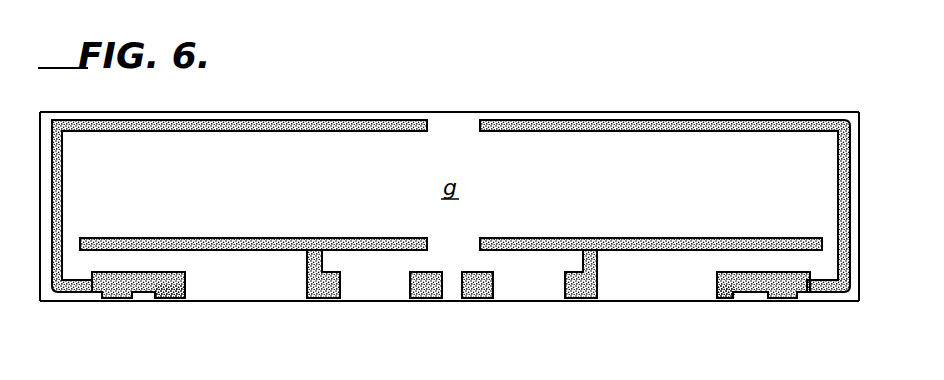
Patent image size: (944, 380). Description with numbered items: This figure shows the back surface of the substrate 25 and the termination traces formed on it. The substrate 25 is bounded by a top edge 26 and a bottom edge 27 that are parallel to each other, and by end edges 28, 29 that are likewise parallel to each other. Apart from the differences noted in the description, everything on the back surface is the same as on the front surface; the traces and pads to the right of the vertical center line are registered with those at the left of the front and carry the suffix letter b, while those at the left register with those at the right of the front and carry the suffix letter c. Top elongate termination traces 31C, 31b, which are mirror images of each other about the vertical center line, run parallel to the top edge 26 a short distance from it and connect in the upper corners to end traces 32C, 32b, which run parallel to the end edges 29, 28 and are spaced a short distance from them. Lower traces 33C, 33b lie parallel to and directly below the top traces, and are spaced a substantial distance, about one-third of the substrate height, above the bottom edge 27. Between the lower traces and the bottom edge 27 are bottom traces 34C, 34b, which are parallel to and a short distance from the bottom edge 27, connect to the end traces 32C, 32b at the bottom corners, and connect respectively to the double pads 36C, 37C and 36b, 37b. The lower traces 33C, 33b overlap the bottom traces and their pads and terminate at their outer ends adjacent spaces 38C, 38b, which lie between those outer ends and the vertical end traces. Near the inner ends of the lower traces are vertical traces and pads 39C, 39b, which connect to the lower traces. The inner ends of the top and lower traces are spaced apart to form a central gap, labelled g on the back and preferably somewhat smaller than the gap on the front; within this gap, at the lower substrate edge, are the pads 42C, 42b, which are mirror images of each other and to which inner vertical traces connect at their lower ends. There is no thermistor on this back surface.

The substrate 25 is at (228, 288).
The top edge 26 is at (497, 116).
The bottom edge 27 is at (655, 302).
The end edge 28 is at (862, 114).
The end edge 29 is at (41, 120).
The top elongate termination trace 31C is at (243, 118).
The top elongate termination trace 31b is at (620, 118).
The end trace 32C is at (63, 178).
The end trace 32b is at (838, 160).
The lower trace 33C is at (190, 238).
The lower trace 33b is at (632, 238).
The bottom trace 34C is at (82, 292).
The bottom trace 34b is at (830, 292).
The pad 36C is at (108, 298).
The pad 36b is at (796, 298).
The pad 37C is at (168, 298).
The pad 37b is at (733, 298).
The space 38C is at (80, 240).
The space 38b is at (826, 243).
The vertical trace and pad 39C is at (330, 298).
The vertical trace and pad 39b is at (572, 298).
The pad 42C is at (430, 298).
The pad 42b is at (473, 298).